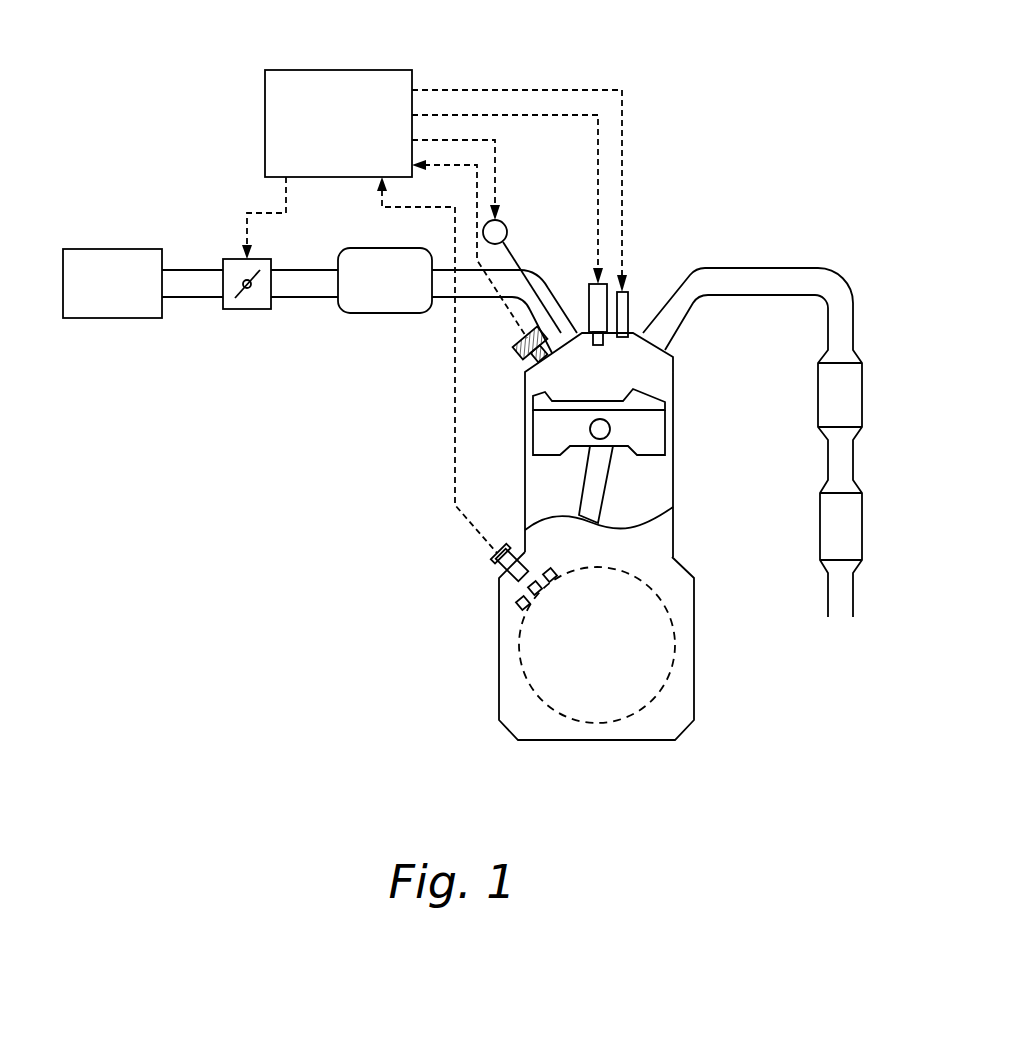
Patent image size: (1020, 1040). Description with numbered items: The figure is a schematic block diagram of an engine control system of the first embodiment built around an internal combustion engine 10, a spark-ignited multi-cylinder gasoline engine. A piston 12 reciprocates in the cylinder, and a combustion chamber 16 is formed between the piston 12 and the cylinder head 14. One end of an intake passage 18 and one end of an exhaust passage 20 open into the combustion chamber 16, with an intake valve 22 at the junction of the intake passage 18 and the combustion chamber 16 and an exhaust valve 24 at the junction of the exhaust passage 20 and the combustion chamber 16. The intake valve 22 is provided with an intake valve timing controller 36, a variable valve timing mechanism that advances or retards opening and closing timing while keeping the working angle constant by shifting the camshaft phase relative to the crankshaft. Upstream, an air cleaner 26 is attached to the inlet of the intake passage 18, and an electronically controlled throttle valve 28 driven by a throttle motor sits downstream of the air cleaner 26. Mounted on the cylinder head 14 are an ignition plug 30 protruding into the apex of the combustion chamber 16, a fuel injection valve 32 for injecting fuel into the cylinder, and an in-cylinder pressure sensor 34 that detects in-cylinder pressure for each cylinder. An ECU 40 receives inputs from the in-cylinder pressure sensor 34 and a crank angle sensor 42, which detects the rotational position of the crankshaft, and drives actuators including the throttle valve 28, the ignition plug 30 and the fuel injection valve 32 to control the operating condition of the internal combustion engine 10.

The internal combustion engine 10 is at (435, 668).
The piston 12 is at (650, 432).
The cylinder head 14 is at (637, 313).
The combustion chamber 16 is at (650, 370).
The intake passage 18 is at (447, 283).
The exhaust passage 20 is at (790, 268).
The intake valve 22 is at (517, 247).
The exhaust valve 24 is at (665, 348).
The air cleaner 26 is at (100, 249).
The throttle valve 28 is at (232, 259).
The ignition plug 30 is at (577, 284).
The fuel injection valve 32 is at (637, 290).
The in-cylinder pressure sensor 34 is at (520, 355).
The intake valve timing controller 36 is at (507, 225).
The ECU 40 is at (337, 70).
The crank angle sensor 42 is at (497, 566).